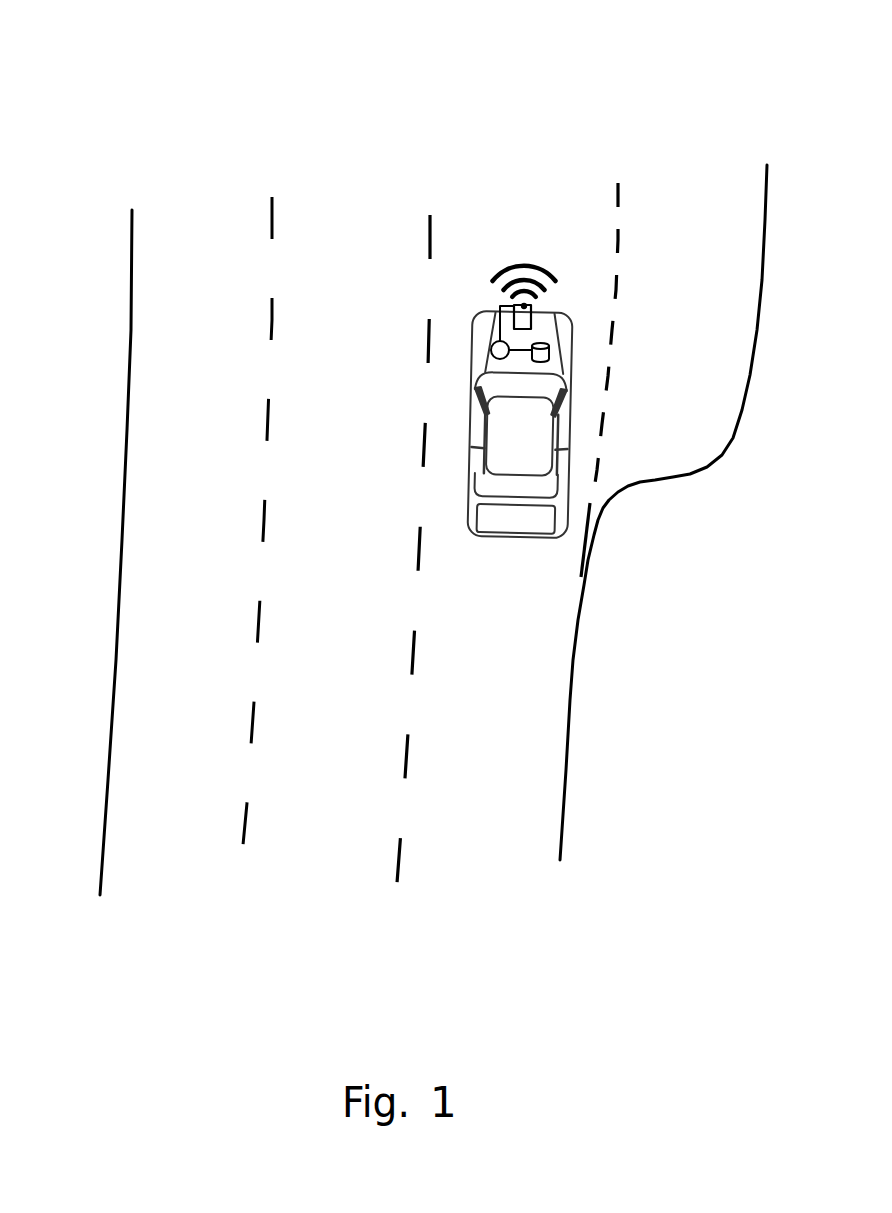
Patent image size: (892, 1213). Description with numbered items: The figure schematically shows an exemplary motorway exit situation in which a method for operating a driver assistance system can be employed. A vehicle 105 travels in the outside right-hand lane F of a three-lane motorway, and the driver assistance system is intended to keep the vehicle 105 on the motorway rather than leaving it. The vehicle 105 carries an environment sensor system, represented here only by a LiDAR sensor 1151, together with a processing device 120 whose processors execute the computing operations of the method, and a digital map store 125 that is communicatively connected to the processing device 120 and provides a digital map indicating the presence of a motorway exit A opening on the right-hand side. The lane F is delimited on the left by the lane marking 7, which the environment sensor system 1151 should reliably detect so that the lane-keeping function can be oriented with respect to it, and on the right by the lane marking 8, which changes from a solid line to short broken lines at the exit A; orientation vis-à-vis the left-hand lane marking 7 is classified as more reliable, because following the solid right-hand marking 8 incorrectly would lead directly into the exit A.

The lane marking 7 is at (430, 178).
The lane marking 8 is at (619, 150).
The motorway exit A is at (688, 231).
The outside right-hand lane F is at (487, 810).
The vehicle 105 is at (570, 408).
The processing device 120 is at (490, 343).
The digital map store 125 is at (550, 352).
The LiDAR sensor 1151 is at (524, 305).